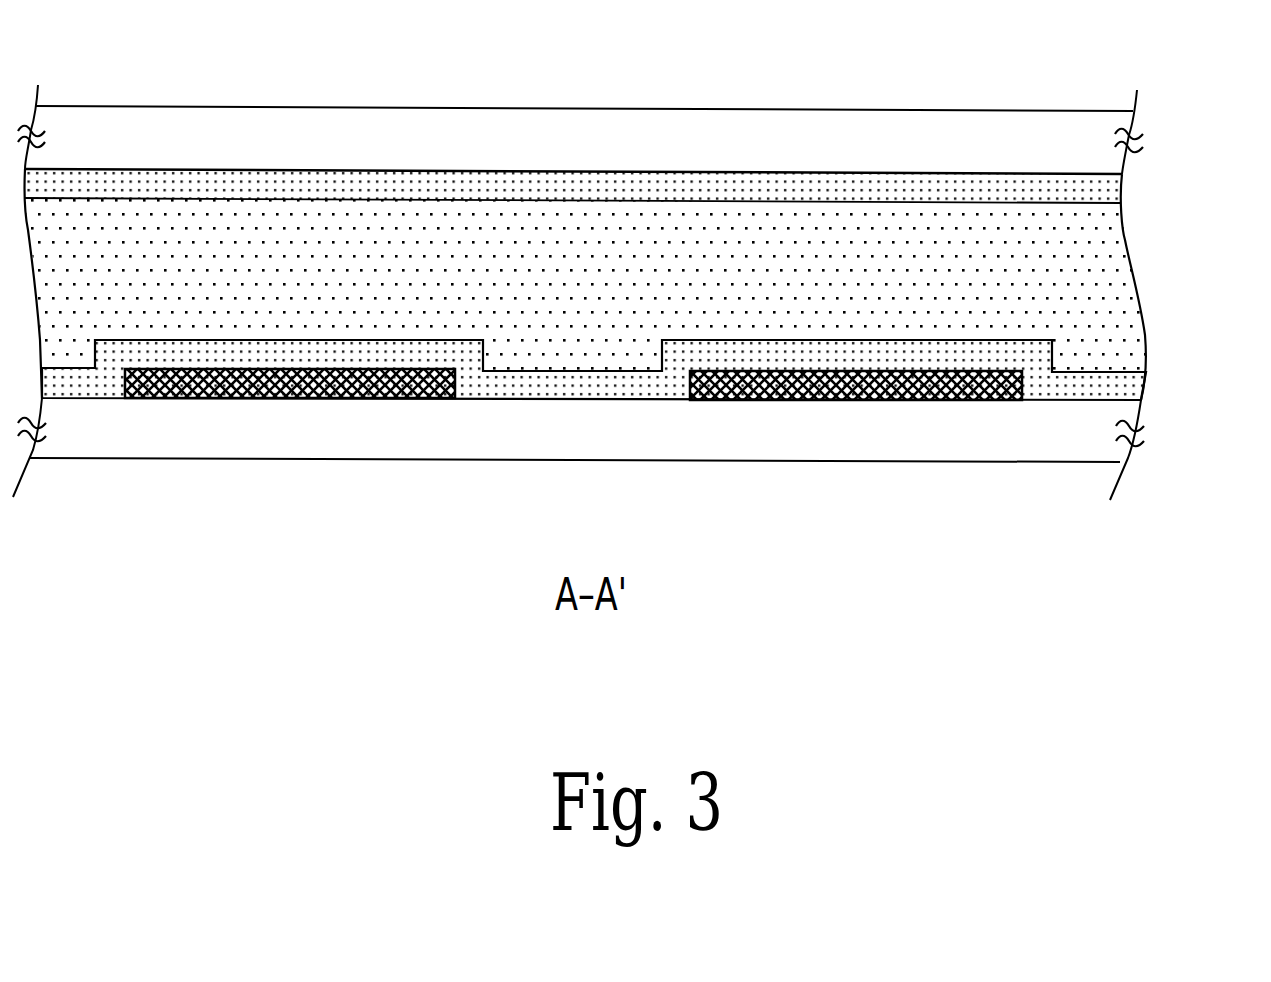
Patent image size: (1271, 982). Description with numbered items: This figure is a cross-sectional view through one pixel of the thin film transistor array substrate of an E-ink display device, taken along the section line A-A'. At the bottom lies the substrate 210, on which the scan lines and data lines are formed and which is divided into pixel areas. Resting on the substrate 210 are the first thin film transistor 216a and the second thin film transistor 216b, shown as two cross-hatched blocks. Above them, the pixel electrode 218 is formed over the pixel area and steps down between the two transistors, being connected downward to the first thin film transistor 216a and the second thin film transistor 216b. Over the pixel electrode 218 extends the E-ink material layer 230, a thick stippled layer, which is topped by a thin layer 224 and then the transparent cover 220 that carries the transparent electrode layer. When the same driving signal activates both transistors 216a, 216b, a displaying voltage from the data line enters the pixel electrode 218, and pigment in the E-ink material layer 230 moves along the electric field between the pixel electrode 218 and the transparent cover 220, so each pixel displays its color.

The transparent cover 220 is at (1130, 120).
The color filter / alignment layer 224 is at (1122, 192).
The E-ink material layer 230 is at (1118, 274).
The pixel electrode 218 is at (1132, 389).
The substrate 210 is at (1132, 418).
The first thin film transistor 216a is at (287, 400).
The second thin film transistor 216b is at (870, 400).